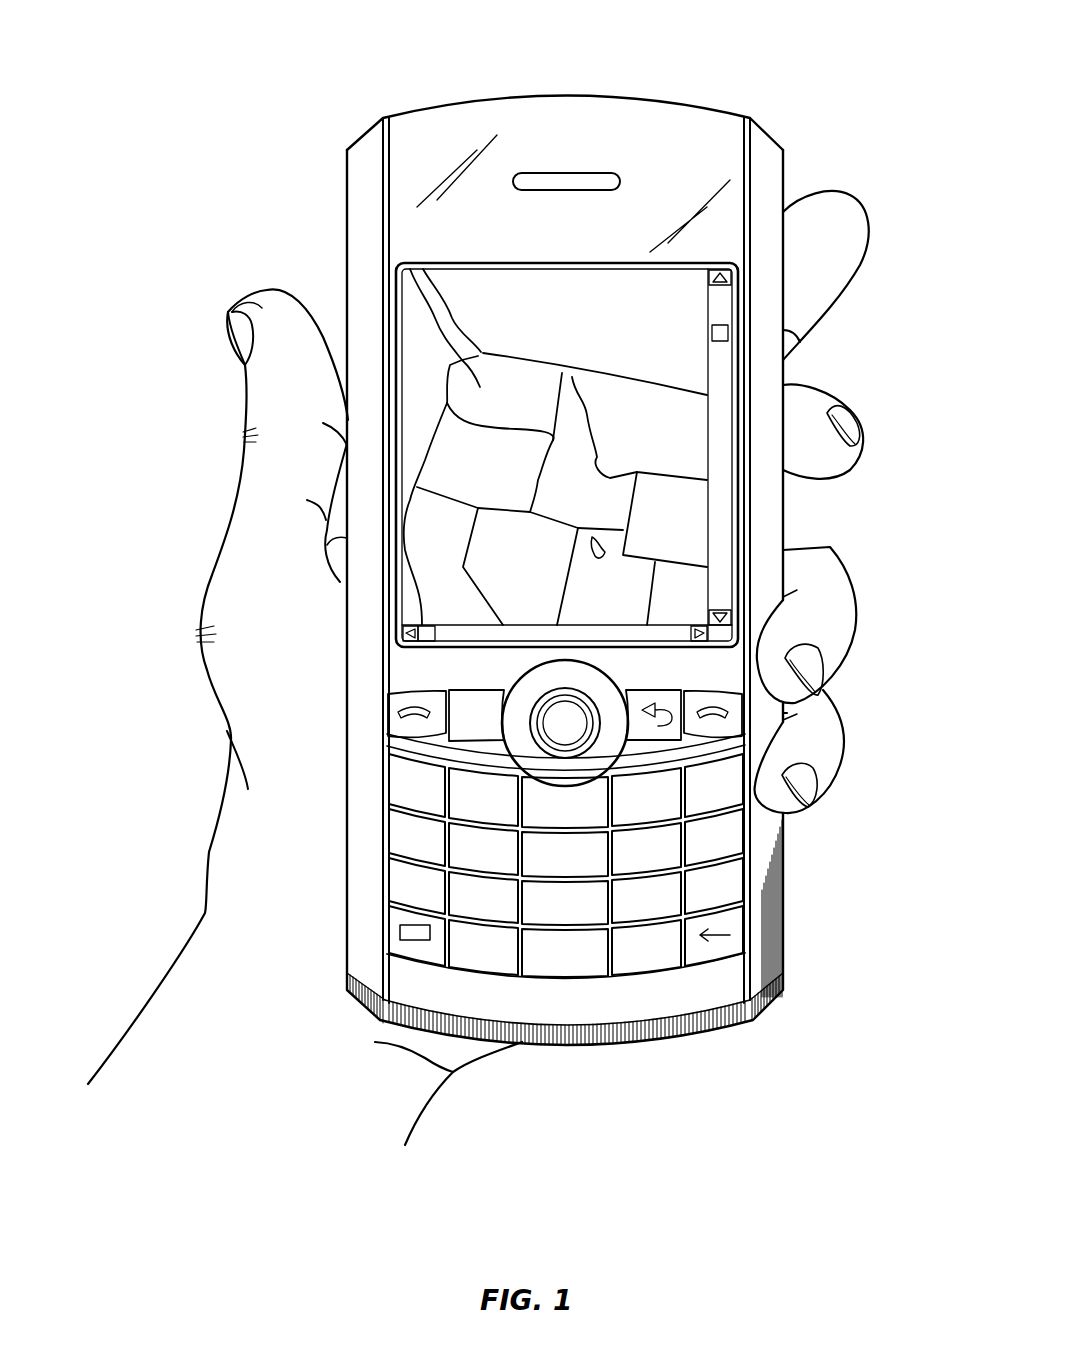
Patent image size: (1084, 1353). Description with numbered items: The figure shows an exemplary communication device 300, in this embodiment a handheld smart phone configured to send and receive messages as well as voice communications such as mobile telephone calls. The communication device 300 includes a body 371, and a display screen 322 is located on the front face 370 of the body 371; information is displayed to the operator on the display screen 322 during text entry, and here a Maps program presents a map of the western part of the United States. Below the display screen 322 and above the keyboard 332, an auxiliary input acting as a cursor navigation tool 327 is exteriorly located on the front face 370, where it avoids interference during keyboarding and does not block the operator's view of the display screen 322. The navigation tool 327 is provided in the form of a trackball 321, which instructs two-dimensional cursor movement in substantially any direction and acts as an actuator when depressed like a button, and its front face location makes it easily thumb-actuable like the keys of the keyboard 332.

The communication device 300 is at (725, 33).
The body 371 is at (347, 147).
The front face 370 is at (767, 183).
The display screen 322 is at (428, 347).
The trackball navigation tool 321 is at (567, 718).
The cursor navigation tool 327 is at (604, 744).
The keyboard 332 is at (580, 1000).